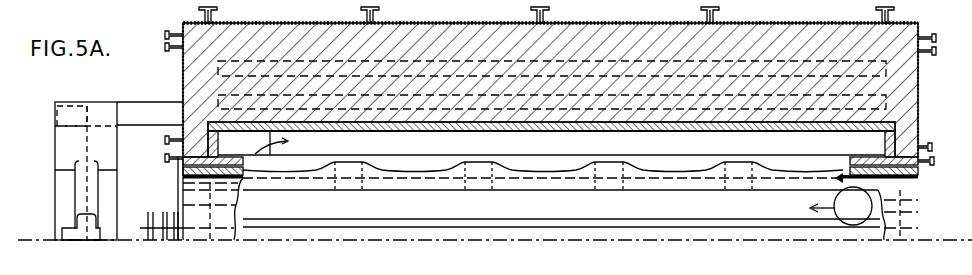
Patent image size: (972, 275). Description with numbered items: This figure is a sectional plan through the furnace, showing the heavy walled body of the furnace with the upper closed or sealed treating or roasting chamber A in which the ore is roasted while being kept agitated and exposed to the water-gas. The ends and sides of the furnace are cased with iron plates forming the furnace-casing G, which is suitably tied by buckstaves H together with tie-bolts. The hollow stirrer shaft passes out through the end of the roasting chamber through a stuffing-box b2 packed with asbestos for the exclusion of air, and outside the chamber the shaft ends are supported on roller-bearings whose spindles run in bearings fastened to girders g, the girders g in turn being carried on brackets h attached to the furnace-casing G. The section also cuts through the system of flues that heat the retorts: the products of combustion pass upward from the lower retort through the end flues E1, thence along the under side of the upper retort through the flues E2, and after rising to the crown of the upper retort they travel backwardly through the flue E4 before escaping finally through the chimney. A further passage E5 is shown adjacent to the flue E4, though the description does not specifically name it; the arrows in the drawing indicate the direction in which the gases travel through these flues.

The furnace-casing G is at (918, 123).
The buckstaves H is at (934, 163).
The flue E4 is at (551, 144).
The partition E5 is at (259, 143).
The flues E2 is at (561, 194).
The end flues E1 is at (841, 206).
The upper closed or sealed treating or roasting chamber A is at (548, 198).
The brackets h is at (138, 108).
The girders g is at (117, 151).
The stuffing-box b2 is at (152, 212).